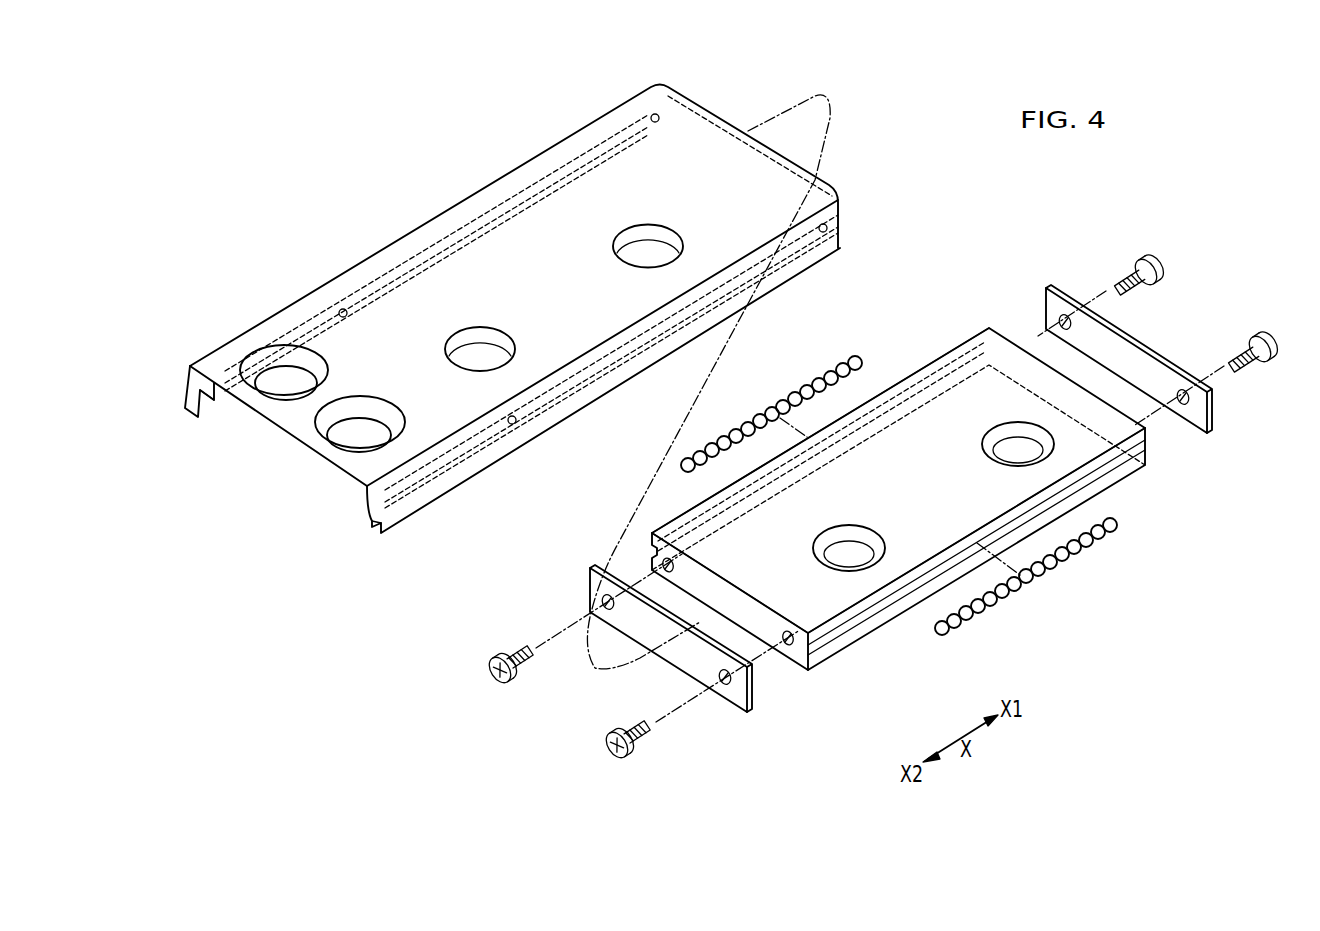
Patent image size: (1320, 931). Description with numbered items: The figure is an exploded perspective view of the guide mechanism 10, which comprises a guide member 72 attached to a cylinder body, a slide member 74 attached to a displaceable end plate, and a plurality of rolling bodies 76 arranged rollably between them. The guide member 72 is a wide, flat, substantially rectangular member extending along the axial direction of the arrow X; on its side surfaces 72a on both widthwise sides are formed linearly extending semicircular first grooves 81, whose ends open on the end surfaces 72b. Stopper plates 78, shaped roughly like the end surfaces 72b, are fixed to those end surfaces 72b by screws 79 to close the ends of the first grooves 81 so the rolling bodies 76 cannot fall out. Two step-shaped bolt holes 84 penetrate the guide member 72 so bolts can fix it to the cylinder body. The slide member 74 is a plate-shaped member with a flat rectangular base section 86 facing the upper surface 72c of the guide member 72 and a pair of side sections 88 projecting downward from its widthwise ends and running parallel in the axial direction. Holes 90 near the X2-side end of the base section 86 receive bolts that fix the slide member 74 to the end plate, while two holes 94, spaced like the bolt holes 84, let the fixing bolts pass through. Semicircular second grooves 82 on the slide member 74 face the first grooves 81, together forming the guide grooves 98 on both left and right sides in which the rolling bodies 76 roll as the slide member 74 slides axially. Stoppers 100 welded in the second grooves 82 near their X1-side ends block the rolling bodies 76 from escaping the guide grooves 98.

The guide mechanism 10 is at (449, 141).
The slide member 74 is at (547, 141).
The base section 86 is at (712, 138).
The side sections 88 is at (308, 318).
The stoppers 100 is at (657, 123).
The holes 94 is at (637, 236).
The holes 90 is at (346, 405).
The second grooves 82 is at (210, 400).
The guide member 72 is at (984, 326).
The side surfaces 72a is at (655, 527).
The end surfaces 72b is at (1010, 355).
The upper surface 72c is at (882, 450).
The first grooves 81 is at (650, 548).
The guide grooves 98 is at (943, 361).
The bolt holes 84 is at (1003, 437).
The rolling bodies 76 is at (780, 395).
The stopper plates 78 is at (695, 667).
The screws 79 is at (503, 684).